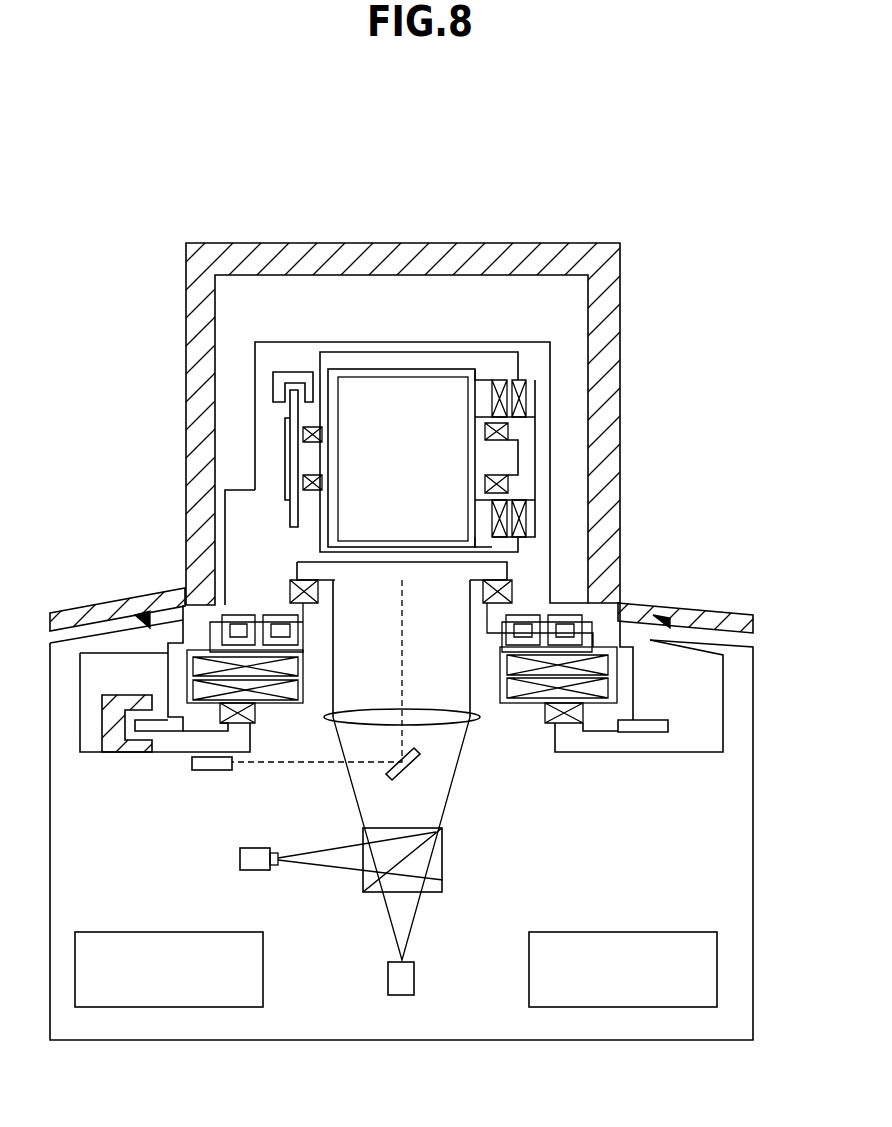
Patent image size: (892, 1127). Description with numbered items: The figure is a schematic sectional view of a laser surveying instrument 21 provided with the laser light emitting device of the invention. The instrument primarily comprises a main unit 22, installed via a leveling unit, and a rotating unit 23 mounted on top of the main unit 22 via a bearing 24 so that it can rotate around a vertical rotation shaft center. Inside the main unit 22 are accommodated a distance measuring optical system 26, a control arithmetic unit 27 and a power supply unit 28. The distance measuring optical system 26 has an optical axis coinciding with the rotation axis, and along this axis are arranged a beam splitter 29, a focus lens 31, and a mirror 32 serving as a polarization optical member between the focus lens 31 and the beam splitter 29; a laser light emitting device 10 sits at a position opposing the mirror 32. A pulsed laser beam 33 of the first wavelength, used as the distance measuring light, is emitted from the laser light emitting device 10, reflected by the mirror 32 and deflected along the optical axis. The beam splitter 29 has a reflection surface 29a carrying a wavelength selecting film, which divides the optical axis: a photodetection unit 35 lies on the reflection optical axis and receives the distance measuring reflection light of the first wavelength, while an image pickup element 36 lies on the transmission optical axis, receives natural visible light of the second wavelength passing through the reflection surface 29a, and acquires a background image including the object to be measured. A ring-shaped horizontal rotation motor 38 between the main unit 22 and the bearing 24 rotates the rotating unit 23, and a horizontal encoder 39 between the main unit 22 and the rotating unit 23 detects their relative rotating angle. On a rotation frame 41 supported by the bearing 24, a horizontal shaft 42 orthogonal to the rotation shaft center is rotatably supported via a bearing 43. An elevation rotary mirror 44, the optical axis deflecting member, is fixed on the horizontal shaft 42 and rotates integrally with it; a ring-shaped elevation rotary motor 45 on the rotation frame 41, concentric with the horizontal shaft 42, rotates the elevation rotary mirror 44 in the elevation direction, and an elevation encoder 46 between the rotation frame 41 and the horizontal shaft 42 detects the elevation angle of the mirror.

The laser light emitting device 10 is at (208, 772).
The laser surveying instrument 21 is at (438, 118).
The main unit 22 is at (762, 853).
The rotating unit 23 is at (630, 323).
The bearing 24 is at (512, 585).
The distance measuring optical system 26 is at (470, 802).
The control arithmetic unit 27 is at (137, 932).
The power supply unit 28 is at (627, 932).
The beam splitter 29 is at (442, 878).
The reflection surface 29a is at (402, 858).
The focus lens 31 is at (422, 710).
The mirror 32 is at (418, 752).
The pulsed laser beam 33 is at (338, 868).
The photodetection unit 35 is at (248, 872).
The image pickup element 36 is at (418, 980).
The horizontal rotation motor 38 is at (624, 688).
The horizontal encoder 39 is at (118, 690).
The rotation frame 41 is at (438, 342).
The horizontal shaft 42 is at (540, 458).
The bearing 43 is at (510, 432).
The elevation rotary mirror 44 is at (370, 369).
The elevation rotary motor 45 is at (534, 380).
The elevation encoder 46 is at (275, 392).